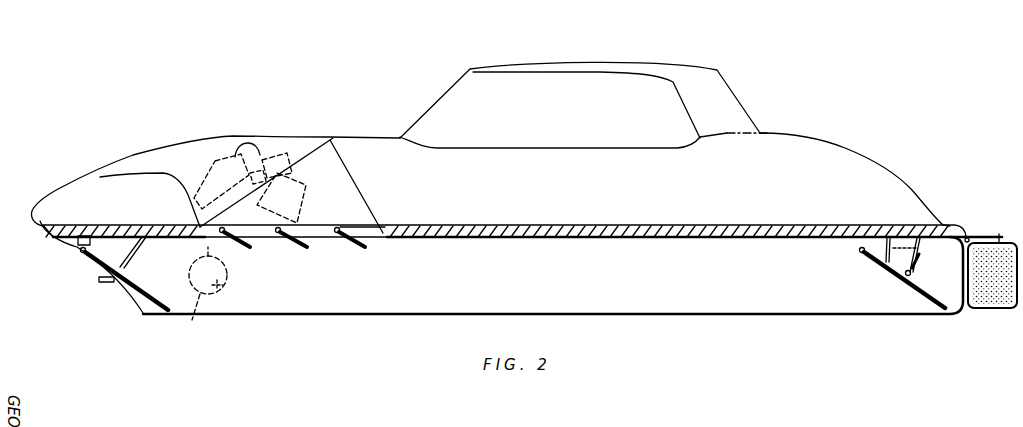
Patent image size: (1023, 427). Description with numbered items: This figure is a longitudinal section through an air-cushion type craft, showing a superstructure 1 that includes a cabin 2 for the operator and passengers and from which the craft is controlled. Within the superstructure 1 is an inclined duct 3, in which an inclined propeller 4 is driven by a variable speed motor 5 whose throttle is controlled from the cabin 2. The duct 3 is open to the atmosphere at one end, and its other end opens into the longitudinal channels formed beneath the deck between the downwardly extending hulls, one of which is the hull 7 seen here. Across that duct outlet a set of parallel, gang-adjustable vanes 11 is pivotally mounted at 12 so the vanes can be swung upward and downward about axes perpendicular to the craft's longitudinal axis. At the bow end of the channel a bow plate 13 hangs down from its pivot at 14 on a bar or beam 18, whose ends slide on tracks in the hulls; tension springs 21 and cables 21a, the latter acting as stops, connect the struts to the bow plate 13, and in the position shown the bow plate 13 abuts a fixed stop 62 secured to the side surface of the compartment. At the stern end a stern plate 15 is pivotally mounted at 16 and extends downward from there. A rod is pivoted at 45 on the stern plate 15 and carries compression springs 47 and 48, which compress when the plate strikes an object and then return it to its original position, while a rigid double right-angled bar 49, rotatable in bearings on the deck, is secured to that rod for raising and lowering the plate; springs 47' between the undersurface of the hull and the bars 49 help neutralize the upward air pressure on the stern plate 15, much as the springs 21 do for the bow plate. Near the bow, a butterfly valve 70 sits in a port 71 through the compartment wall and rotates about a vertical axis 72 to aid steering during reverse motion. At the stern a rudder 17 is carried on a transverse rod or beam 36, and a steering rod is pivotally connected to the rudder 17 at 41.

The superstructure 1 is at (113, 149).
The cabin 2 is at (607, 66).
The inclined duct 3 is at (180, 188).
The inclined propeller 4 is at (273, 158).
The variable speed motor 5 is at (293, 186).
The hull 7 is at (400, 293).
The gang-adjustable vanes 11 is at (299, 246).
The vane pivot mounting 12 is at (340, 227).
The bow plate 13 is at (147, 305).
The bow plate pivot 14 is at (82, 252).
The stern plate 15 is at (910, 300).
The stern plate pivot 16 is at (859, 251).
The rudder 17 is at (988, 313).
The bar or beam 18 is at (78, 241).
The tension springs 21 is at (115, 240).
The cables 21a is at (140, 253).
The rod or beam 36 is at (969, 236).
The rudder rod pivot connection 41 is at (999, 234).
The stern plate rod pivot 45 is at (905, 275).
The compression spring 47 is at (935, 255).
The springs 47' is at (869, 229).
The compression spring 48 is at (917, 265).
The double right-angled bar 49 is at (907, 247).
The fixed stop 62 is at (106, 284).
The butterfly valve 70 is at (218, 284).
The port 71 is at (189, 316).
The vertical axis 72 is at (227, 259).